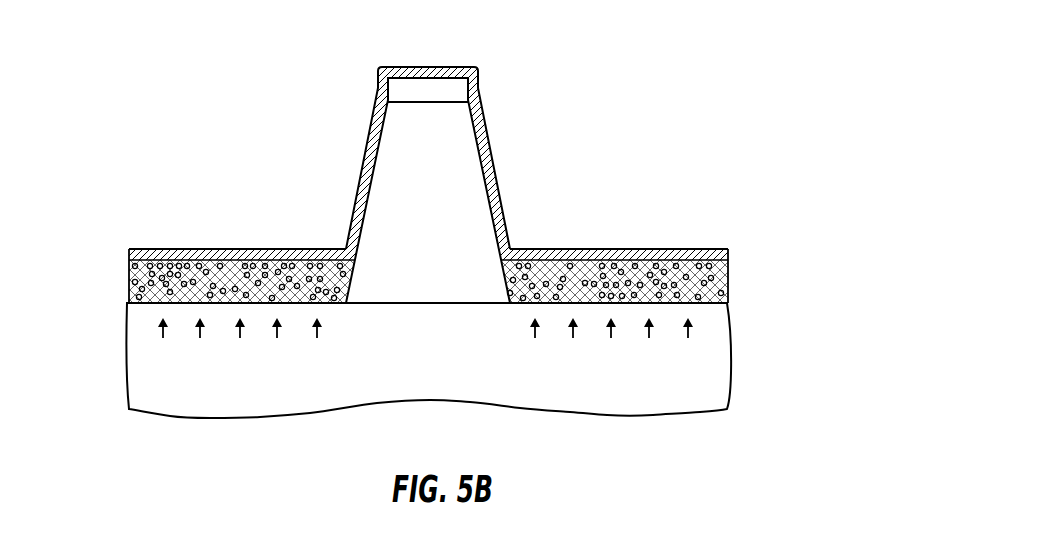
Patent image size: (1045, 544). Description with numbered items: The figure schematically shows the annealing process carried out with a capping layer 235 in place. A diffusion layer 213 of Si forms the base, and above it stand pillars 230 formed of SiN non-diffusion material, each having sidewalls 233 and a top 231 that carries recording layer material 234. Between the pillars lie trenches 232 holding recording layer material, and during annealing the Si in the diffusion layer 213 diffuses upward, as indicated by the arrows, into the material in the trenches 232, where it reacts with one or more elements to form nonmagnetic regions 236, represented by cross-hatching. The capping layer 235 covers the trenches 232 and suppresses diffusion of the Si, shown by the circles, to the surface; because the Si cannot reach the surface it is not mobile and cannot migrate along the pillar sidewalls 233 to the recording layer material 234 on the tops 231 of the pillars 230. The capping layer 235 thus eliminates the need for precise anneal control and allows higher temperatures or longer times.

The diffusion layer 213 is at (570, 390).
The pillars 230 is at (467, 197).
The tops of the pillars 231 is at (440, 98).
The trenches 232 is at (210, 303).
The sidewalls of the pillars 233 is at (372, 163).
The recording layer material 234 is at (408, 85).
The capping layer 235 is at (225, 255).
The nonmagnetic regions 236 is at (148, 280).